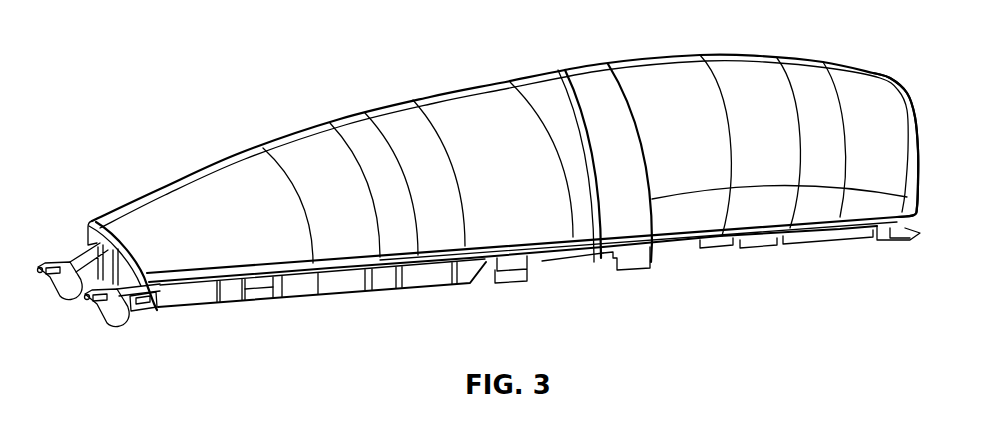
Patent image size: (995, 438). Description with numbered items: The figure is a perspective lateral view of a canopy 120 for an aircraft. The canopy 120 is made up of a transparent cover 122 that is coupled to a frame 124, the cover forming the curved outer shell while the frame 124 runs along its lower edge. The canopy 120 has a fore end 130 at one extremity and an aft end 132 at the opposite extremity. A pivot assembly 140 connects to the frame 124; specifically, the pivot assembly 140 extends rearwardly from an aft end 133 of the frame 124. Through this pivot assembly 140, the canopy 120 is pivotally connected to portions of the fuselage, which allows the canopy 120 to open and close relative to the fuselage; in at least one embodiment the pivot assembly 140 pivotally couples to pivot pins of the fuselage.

The canopy 120 is at (136, 160).
The transparent cover 122 is at (470, 100).
The frame 124 is at (318, 286).
The fore end 130 is at (910, 88).
The aft end 132 is at (74, 227).
The aft end of the frame 133 is at (155, 306).
The pivot assembly 140 is at (100, 336).